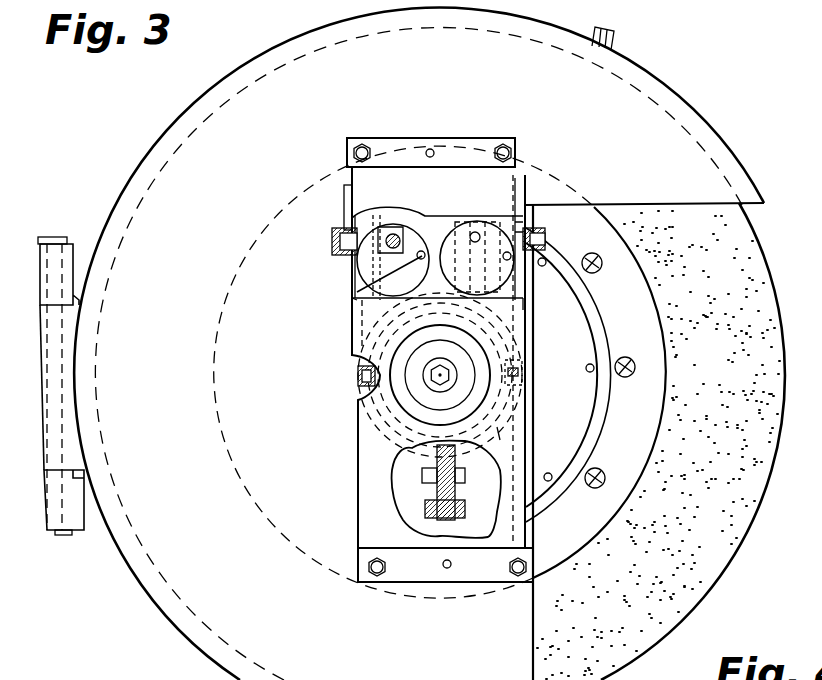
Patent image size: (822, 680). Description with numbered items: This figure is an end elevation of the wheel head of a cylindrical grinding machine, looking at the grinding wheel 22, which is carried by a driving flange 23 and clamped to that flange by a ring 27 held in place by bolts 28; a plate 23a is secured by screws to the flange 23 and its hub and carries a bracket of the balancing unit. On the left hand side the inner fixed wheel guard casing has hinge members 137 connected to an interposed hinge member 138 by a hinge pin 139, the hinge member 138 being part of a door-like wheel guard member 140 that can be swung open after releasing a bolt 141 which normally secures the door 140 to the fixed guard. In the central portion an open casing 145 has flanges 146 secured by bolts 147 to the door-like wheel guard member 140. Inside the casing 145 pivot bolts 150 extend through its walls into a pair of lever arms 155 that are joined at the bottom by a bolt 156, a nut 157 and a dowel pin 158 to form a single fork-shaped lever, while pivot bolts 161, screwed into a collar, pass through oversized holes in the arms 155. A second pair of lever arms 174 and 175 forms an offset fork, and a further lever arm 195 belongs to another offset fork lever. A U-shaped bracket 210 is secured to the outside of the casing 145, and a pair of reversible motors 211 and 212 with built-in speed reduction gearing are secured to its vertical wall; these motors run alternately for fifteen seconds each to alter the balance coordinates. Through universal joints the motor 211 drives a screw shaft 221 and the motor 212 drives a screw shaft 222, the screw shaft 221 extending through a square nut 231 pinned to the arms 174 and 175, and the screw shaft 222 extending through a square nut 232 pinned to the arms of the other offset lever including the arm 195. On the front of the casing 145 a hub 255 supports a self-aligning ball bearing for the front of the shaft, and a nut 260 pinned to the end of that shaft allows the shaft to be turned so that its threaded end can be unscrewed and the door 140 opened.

The grinding wheel 22 is at (760, 268).
The driving flange 23 is at (598, 410).
The plate 23a is at (540, 484).
The ring 27 is at (610, 440).
The bolts 28 is at (626, 356).
The hinge members 137 is at (80, 246).
The hinge member 138 is at (62, 418).
The hinge pin 139 is at (56, 237).
The door-like wheel guard member 140 is at (197, 632).
The bolt 141 is at (608, 30).
The open casing 145 is at (360, 497).
The flanges 146 is at (452, 138).
The bolts 147 is at (362, 147).
The pivot bolts 150 is at (334, 244).
The lever arms 155 is at (385, 230).
The bolt 156 is at (456, 478).
The nut 157 is at (437, 479).
The dowel pin 158 is at (462, 502).
The pivot bolts 161 is at (364, 377).
The lever arm 174 is at (370, 263).
The lever arm 175 is at (405, 238).
The lever arm 195 is at (527, 305).
The bracket 210 is at (437, 226).
The motor 211 is at (352, 300).
The motor 212 is at (473, 234).
The screw shaft 221 is at (395, 236).
The screw shaft 222 is at (519, 220).
The nut 231 is at (393, 260).
The nut 232 is at (477, 258).
The hub 255 is at (490, 386).
The nut 260 is at (440, 372).